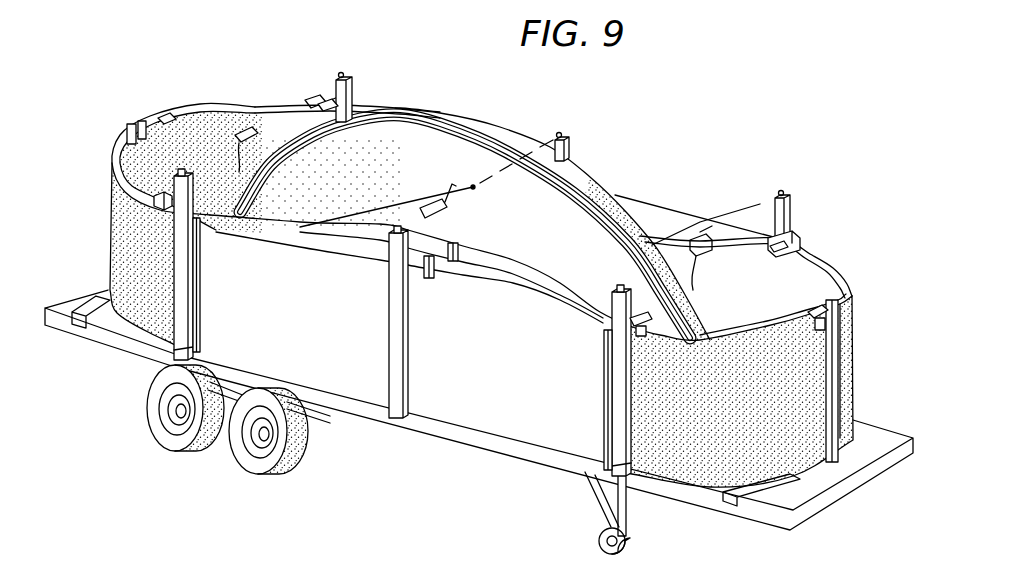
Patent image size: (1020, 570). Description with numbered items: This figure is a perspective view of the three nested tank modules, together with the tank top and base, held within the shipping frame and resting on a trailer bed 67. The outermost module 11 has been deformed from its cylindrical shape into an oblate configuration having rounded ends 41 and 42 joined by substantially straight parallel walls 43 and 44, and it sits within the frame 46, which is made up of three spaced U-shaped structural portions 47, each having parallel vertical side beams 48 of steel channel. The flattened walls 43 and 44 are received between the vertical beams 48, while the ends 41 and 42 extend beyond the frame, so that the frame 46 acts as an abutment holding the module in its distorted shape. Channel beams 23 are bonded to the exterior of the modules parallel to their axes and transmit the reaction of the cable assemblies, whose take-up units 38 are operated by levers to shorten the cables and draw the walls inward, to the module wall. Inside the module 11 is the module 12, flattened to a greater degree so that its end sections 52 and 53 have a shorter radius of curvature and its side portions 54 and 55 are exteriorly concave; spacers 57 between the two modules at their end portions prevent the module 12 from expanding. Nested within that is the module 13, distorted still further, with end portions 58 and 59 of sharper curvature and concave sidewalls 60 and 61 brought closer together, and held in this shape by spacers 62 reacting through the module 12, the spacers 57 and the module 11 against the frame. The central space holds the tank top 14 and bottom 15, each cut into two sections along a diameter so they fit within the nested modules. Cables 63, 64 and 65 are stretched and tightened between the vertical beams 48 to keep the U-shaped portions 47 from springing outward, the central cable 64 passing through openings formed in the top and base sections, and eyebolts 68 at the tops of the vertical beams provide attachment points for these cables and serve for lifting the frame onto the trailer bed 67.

The cylindrical module 11 is at (106, 245).
The cylindrical module 12 is at (306, 232).
The cylindrical module 13 is at (343, 249).
The top 14 is at (594, 181).
The bottom 15 is at (577, 203).
The channel beam 23 is at (198, 300).
The take-up unit 38 is at (700, 252).
The rounded end 41 is at (112, 152).
The rounded end 42 is at (855, 342).
The straight wall 43 is at (648, 205).
The straight wall 44 is at (468, 420).
The frame 46 is at (392, 417).
The U-shaped structural portion 47 is at (386, 320).
The vertical side beam 48 is at (175, 305).
The end section 52 is at (114, 168).
The end section 53 is at (852, 290).
The concave side portion 54 is at (680, 218).
The concave side portion 55 is at (514, 290).
The spacer 57 is at (128, 132).
The end portion 58 is at (118, 180).
The end portion 59 is at (838, 270).
The concave sidewall 60 is at (698, 236).
The concave sidewall 61 is at (522, 263).
The spacer 62 is at (166, 118).
The cable 63 is at (318, 105).
The central cable 64 is at (418, 212).
The cable 65 is at (760, 203).
The trailer bed 67 is at (778, 503).
The eyebolt 68 is at (345, 80).